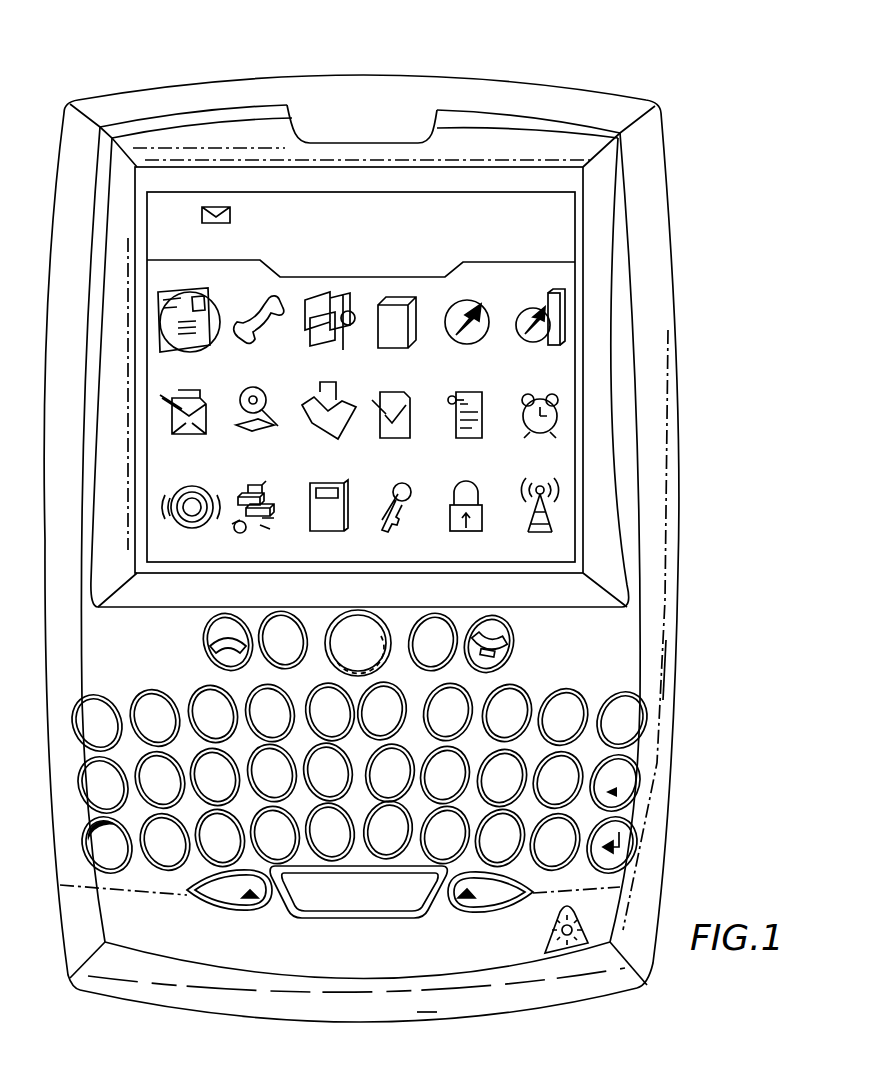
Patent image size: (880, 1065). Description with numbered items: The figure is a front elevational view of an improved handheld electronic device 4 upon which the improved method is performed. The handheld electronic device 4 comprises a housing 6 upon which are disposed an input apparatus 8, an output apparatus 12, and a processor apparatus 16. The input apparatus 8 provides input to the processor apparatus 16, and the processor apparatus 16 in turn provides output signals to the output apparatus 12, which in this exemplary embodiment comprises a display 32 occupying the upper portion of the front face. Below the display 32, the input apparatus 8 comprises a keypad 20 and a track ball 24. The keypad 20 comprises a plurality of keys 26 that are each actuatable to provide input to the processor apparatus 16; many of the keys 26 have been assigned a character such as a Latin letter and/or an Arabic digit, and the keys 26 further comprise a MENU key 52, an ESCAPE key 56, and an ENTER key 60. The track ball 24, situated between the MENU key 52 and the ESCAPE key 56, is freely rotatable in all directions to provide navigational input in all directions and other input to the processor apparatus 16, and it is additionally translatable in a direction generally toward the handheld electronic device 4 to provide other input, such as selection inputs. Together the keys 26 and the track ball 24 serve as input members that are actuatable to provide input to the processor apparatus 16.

The handheld electronic device 4 is at (470, 78).
The housing 6 is at (668, 159).
The input apparatus 8 is at (390, 622).
The output apparatus 12 is at (550, 232).
The processor apparatus 16 is at (230, 938).
The keypad 20 is at (645, 753).
The track ball 24 is at (381, 655).
The keys 26 is at (150, 690).
The display 32 is at (503, 217).
The MENU key 52 is at (273, 655).
The ESCAPE key 56 is at (450, 664).
The ENTER key 60 is at (580, 880).